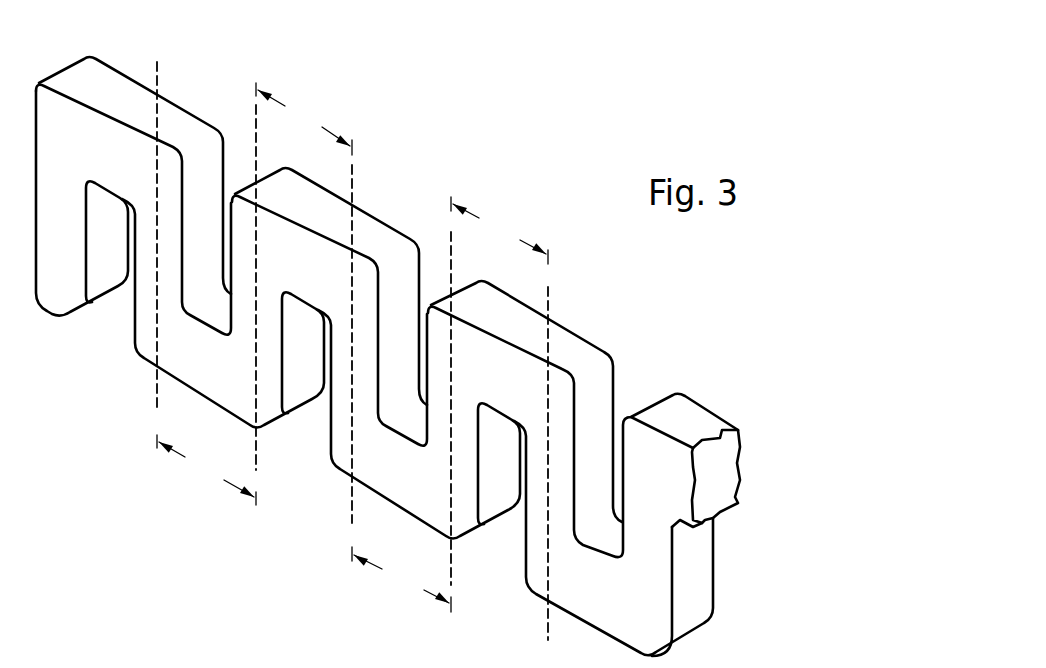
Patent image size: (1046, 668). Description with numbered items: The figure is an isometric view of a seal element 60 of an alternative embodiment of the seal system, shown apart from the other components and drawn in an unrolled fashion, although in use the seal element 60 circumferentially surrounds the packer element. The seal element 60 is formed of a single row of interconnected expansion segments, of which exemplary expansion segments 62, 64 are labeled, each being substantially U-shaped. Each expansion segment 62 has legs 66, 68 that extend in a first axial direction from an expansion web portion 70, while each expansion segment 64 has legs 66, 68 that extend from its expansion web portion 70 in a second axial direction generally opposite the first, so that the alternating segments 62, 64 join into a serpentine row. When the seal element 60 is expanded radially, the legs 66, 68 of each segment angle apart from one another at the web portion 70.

The seal element 60 is at (495, 158).
The expansion segment 62 is at (304, 337).
The expansion segment 64 is at (402, 361).
The leg 66 is at (243, 220).
The leg 68 is at (164, 172).
The expansion web portion 70 is at (313, 255).